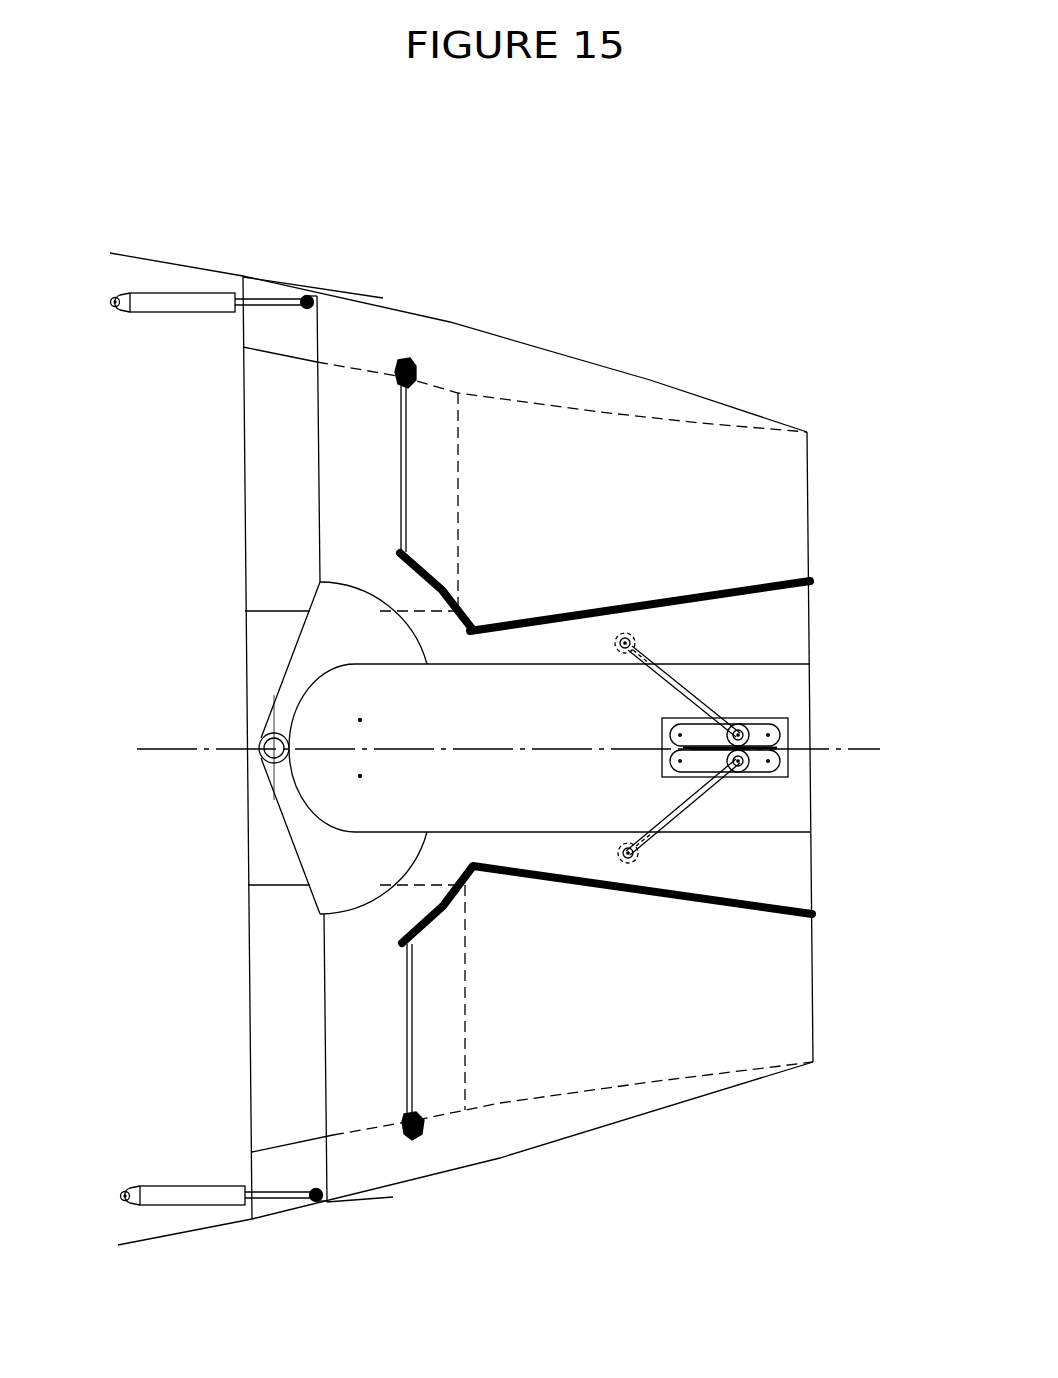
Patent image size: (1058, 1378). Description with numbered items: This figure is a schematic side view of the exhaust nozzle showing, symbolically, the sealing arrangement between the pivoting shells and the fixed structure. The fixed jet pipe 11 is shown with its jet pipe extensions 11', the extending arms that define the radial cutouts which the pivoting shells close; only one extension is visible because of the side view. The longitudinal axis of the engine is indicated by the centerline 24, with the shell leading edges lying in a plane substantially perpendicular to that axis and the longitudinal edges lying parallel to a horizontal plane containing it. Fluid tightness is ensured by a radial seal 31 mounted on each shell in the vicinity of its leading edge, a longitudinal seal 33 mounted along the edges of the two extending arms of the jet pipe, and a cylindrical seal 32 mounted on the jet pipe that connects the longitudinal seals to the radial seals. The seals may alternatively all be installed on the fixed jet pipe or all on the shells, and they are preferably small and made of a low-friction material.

The jet pipe 11 is at (461, 693).
The jet pipe extensions 11' is at (680, 417).
The centerline 24 is at (183, 750).
The radial seal 31 is at (405, 362).
The cylindrical seal 32 is at (435, 572).
The longitudinal seal 33 is at (615, 603).